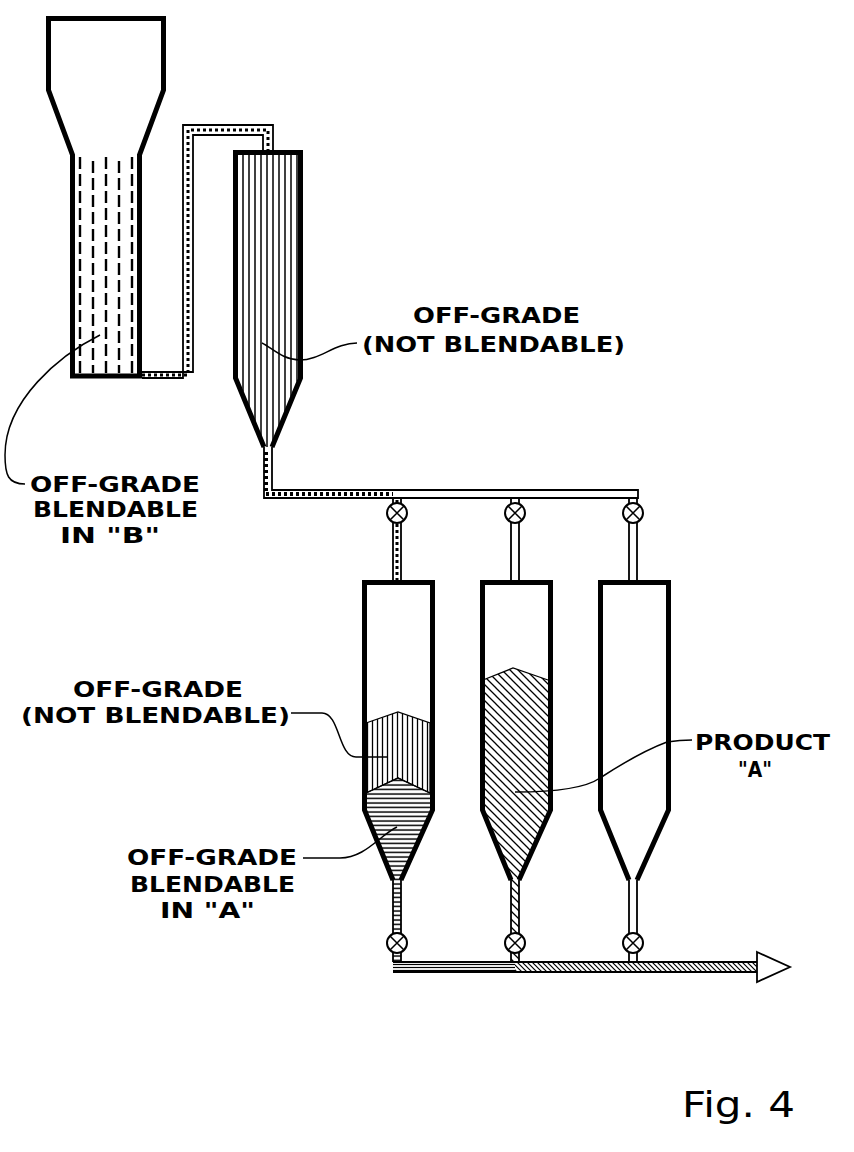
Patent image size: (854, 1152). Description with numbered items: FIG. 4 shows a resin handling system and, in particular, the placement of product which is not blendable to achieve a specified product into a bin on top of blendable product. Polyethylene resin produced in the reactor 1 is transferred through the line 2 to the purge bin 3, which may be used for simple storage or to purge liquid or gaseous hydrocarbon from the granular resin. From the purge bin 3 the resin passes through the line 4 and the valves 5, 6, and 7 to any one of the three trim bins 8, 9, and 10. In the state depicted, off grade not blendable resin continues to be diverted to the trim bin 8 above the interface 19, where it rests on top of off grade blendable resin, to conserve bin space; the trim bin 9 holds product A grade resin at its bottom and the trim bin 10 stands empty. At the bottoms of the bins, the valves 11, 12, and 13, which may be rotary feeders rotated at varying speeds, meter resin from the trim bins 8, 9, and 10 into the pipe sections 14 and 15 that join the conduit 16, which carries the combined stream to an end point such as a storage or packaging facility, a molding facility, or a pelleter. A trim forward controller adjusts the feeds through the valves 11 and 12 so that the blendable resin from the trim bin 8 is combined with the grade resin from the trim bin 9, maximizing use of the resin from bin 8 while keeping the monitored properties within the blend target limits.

The reactor 1 is at (108, 379).
The line 2 is at (184, 379).
The purge bin 3 is at (304, 265).
The line 4 is at (310, 490).
The valve 5 is at (407, 517).
The valve 6 is at (525, 517).
The valve 7 is at (643, 517).
The trim bin 8 is at (448, 658).
The trim bin 9 is at (566, 658).
The trim bin 10 is at (684, 658).
The valve 11 is at (407, 939).
The valve 12 is at (525, 939).
The valve 13 is at (643, 939).
The outlet pipe section 14 is at (508, 973).
The outlet pipe section 15 is at (628, 973).
The conduit 16 is at (723, 973).
The interface 19 is at (367, 792).